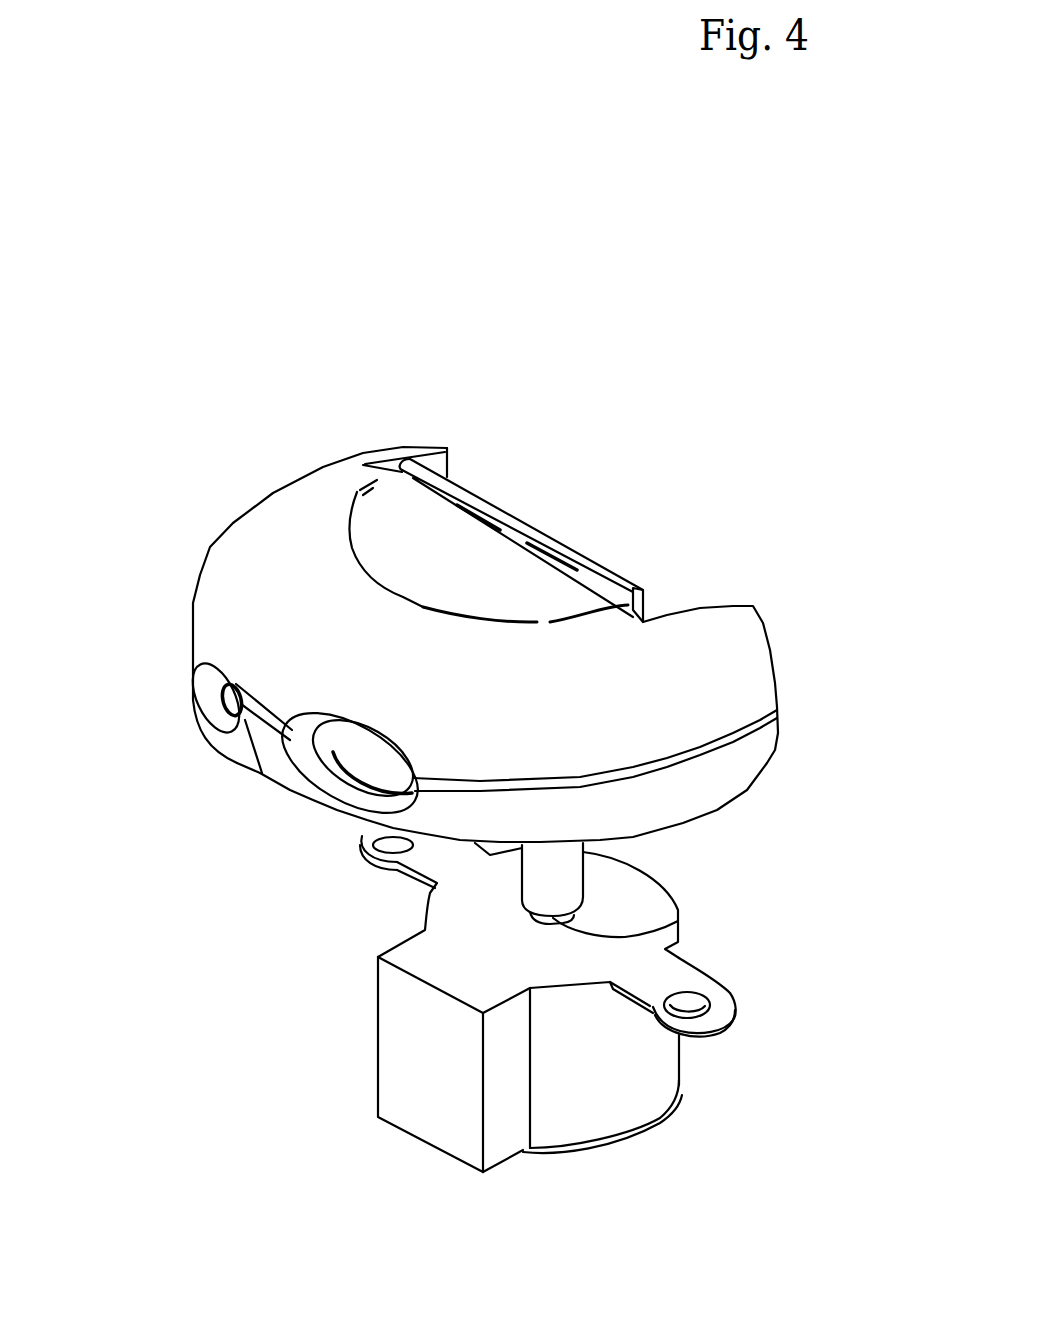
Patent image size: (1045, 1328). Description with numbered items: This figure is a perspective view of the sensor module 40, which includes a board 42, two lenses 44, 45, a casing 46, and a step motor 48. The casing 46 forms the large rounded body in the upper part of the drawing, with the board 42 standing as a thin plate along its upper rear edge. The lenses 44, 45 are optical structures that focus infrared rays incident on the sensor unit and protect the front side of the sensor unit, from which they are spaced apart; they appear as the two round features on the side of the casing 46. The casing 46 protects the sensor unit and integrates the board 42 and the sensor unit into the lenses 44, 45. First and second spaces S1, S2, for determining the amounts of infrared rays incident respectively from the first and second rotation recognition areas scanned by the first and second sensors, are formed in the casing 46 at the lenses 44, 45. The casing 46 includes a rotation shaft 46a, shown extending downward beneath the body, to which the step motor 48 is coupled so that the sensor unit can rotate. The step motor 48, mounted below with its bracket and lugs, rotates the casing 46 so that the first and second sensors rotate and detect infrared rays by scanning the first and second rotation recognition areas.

The sensor module 40 is at (578, 416).
The board 42 is at (575, 553).
The lens 44 is at (222, 724).
The lens 45 is at (375, 812).
The casing 46 is at (272, 587).
The rotation shaft 46a is at (655, 930).
The step motor 48 is at (620, 1085).
The first space S1 is at (207, 697).
The second space S2 is at (385, 803).